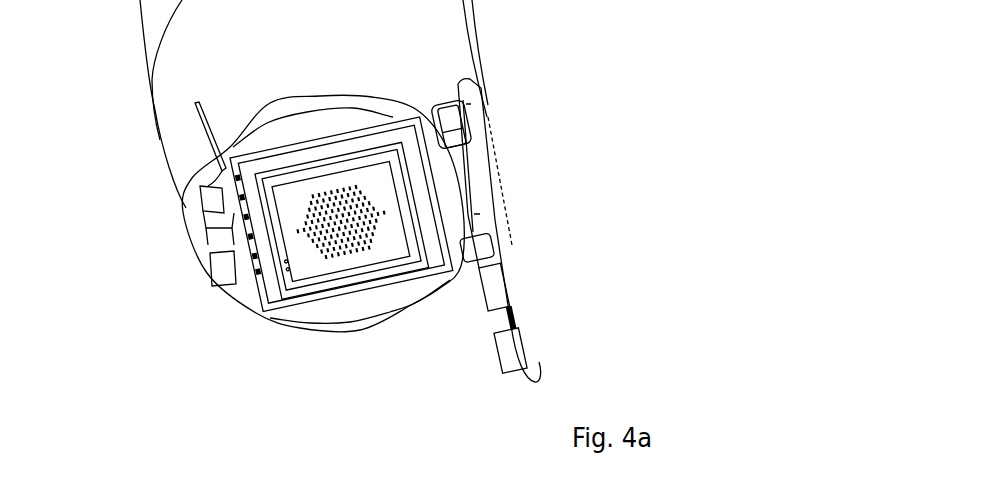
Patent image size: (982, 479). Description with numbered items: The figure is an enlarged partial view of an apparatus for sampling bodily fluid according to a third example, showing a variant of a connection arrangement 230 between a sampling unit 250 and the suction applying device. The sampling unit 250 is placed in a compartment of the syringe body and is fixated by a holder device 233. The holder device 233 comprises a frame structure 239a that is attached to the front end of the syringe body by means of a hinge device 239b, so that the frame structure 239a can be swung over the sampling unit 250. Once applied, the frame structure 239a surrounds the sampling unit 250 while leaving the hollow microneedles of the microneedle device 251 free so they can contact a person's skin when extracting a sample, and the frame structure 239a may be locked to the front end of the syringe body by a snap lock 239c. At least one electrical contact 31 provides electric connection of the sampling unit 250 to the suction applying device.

The connection arrangement 230 is at (531, 124).
The holder device 233 is at (513, 188).
The frame structure 239a is at (515, 272).
The hinge device 239b is at (450, 117).
The snap lock 239c is at (233, 273).
The sampling unit 250 is at (275, 285).
The microneedle device 251 is at (325, 271).
The electrical contact 31 is at (240, 192).